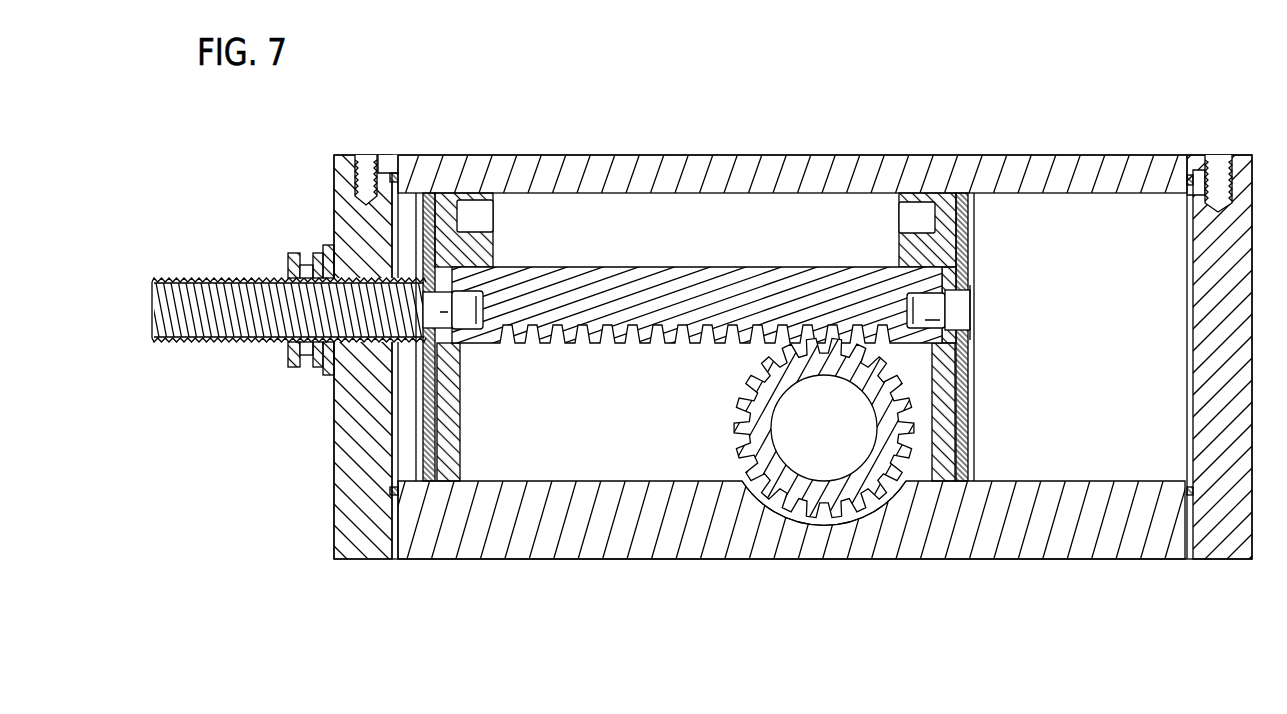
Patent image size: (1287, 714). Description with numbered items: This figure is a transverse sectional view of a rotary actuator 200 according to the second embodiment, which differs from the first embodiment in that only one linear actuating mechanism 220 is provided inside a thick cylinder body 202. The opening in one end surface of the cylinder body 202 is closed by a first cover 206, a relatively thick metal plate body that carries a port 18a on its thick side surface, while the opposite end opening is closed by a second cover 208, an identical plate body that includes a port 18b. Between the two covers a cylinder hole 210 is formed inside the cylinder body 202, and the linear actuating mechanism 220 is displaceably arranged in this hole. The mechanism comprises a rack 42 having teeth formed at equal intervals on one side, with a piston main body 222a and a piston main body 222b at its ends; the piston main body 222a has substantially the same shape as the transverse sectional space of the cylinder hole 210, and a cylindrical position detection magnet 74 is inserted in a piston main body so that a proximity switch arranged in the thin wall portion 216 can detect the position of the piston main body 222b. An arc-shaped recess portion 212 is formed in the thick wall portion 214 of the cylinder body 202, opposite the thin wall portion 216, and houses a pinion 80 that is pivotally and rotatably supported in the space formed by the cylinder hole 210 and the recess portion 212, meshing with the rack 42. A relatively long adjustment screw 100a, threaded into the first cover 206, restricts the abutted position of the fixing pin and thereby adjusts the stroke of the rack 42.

The rotary actuator 200 is at (378, 75).
The cylinder body 202 is at (805, 137).
The first cover 206 is at (342, 483).
The second cover 208 is at (1223, 558).
The cylinder hole 210 is at (1080, 337).
The recess portion 212 is at (800, 526).
The thick wall portion 214 is at (543, 556).
The thin wall portion 216 is at (705, 157).
The linear actuating mechanism 220 is at (733, 266).
The piston main body 222a is at (495, 245).
The piston main body 222b is at (898, 252).
The port 18a is at (365, 163).
The port 18b is at (1222, 165).
The rack 42 is at (665, 270).
The position detection magnet 74 is at (902, 209).
The pinion 80 is at (762, 418).
The adjustment screw 100a is at (185, 344).